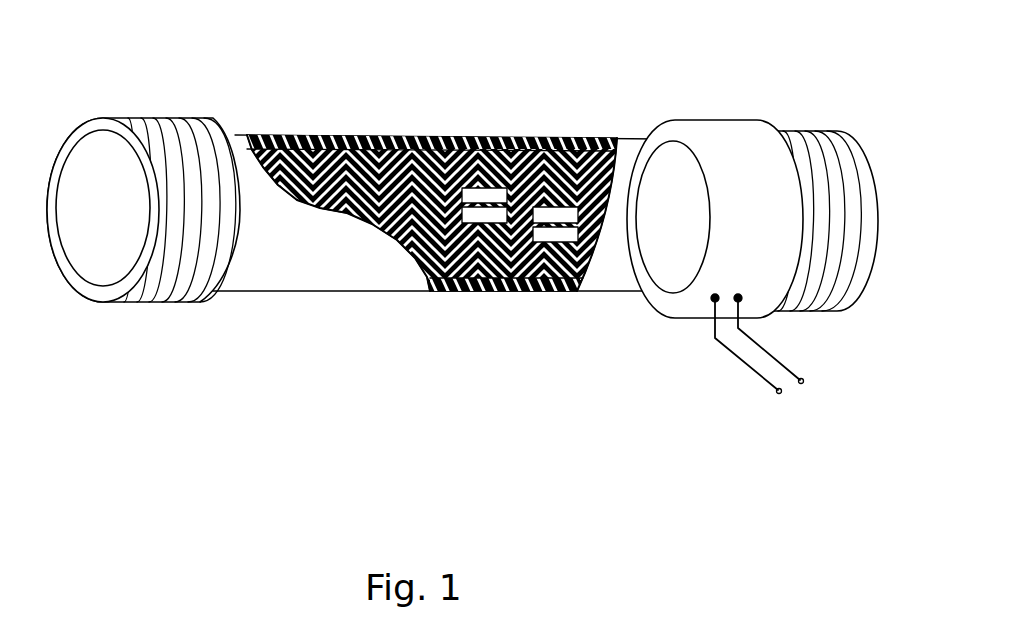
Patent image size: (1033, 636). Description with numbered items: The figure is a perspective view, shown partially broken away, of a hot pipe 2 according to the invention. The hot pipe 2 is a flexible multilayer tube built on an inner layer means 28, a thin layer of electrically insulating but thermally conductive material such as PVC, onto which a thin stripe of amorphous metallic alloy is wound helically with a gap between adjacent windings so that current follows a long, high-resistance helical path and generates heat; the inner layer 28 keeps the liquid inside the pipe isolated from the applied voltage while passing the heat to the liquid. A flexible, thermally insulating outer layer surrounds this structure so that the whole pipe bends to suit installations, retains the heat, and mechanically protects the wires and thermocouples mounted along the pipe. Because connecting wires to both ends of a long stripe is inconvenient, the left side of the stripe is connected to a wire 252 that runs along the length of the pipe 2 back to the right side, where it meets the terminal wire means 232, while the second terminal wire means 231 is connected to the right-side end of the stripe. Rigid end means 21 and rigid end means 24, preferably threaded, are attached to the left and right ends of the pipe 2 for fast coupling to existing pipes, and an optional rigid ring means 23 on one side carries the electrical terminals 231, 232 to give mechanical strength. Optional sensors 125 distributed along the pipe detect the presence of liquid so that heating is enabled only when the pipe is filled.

The hot pipe 2 is at (299, 276).
The rigid end means 21 is at (158, 122).
The rigid ring means 23 is at (712, 125).
The rigid end means 24 is at (810, 144).
The inner layer means 28 is at (305, 135).
The sensors 125 is at (488, 137).
The second terminal wire means 231 is at (763, 347).
The terminal wire means 232 is at (740, 363).
The wire 252 is at (432, 292).